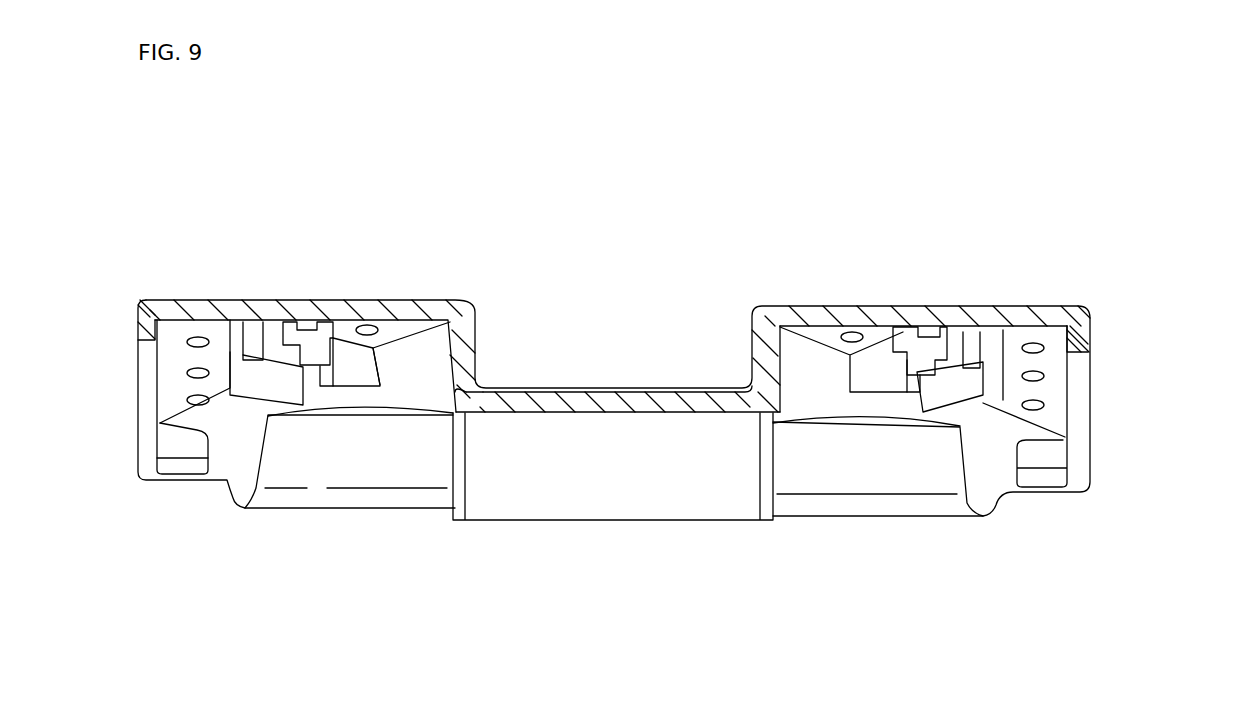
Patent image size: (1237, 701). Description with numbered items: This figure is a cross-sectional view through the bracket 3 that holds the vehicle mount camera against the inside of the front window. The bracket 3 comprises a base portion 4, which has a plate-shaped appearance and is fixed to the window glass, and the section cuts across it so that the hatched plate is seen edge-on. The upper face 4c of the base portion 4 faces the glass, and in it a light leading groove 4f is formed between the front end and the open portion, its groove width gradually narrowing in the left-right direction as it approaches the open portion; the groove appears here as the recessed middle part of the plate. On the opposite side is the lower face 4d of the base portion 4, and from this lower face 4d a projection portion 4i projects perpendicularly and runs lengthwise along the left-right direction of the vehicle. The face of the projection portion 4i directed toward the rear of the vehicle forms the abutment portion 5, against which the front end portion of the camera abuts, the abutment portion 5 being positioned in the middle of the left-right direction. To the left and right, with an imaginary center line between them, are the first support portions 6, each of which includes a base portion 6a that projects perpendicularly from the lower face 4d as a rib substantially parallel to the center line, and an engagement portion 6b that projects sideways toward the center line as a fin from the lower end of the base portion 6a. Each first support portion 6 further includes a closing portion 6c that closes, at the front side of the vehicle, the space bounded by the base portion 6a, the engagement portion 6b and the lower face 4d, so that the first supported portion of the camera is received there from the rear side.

The bracket 3 is at (671, 373).
The base portion 4 is at (671, 369).
The upper face 4c is at (671, 369).
The lower face 4d is at (400, 327).
The light leading groove 4f is at (618, 386).
The projection portion 4i is at (707, 497).
The abutment portion 5 is at (610, 492).
The first support portion 6 is at (635, 275).
The base portion 6a is at (270, 328).
The engagement portion 6b is at (315, 328).
The closing portion 6c is at (333, 335).